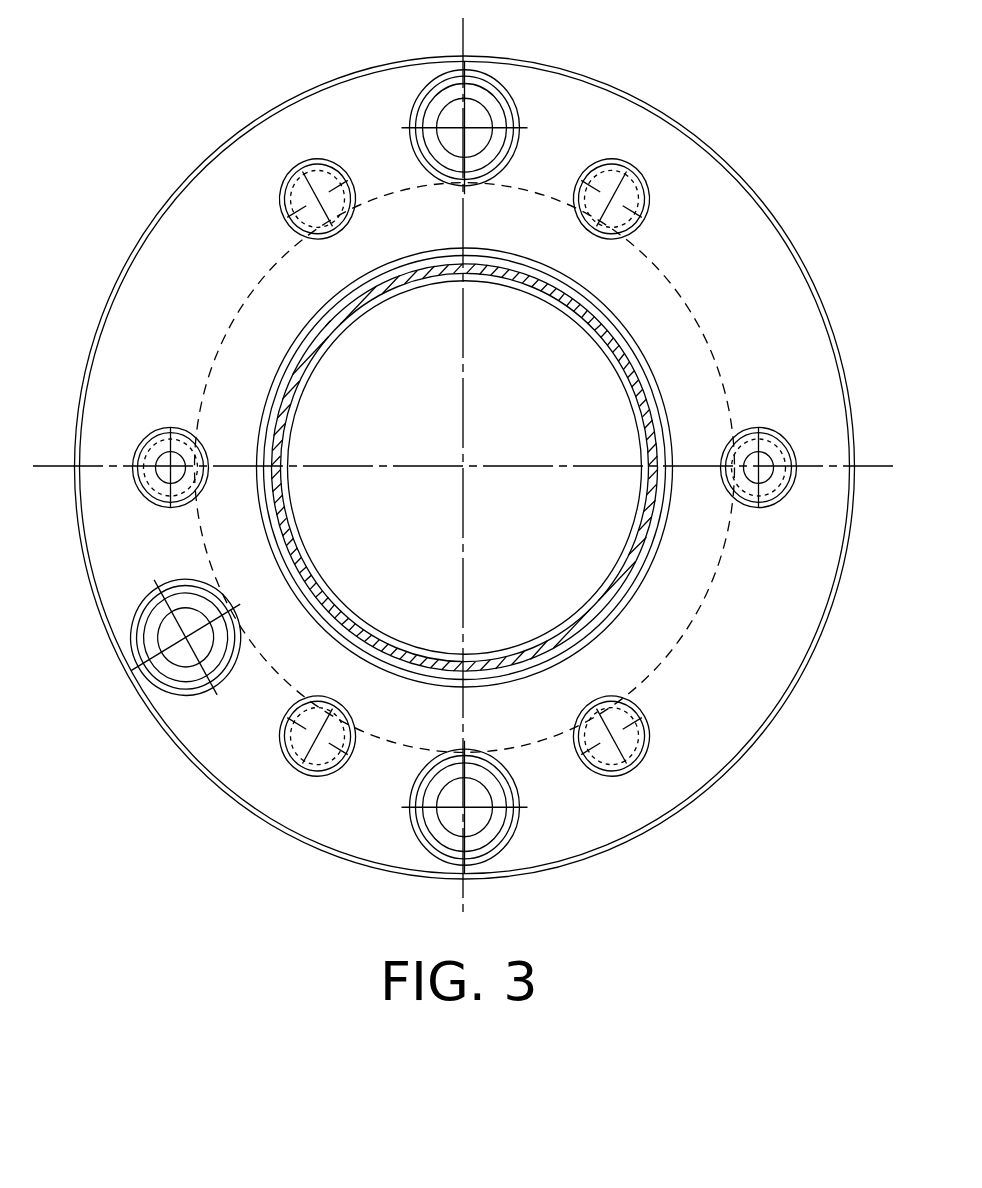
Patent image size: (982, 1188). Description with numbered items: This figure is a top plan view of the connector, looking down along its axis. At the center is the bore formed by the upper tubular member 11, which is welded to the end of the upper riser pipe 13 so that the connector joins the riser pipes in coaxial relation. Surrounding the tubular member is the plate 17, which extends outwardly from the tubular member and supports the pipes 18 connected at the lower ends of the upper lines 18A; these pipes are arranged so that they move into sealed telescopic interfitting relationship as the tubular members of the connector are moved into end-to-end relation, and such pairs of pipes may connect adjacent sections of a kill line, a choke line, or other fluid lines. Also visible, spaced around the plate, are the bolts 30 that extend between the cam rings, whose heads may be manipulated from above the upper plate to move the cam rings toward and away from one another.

The upper tubular member 11 is at (640, 570).
The upper riser pipe 13 is at (635, 360).
The lower plate 17 is at (708, 247).
The pipes 18 is at (492, 100).
The upper lines 18A is at (513, 98).
The bolts 30 is at (621, 192).